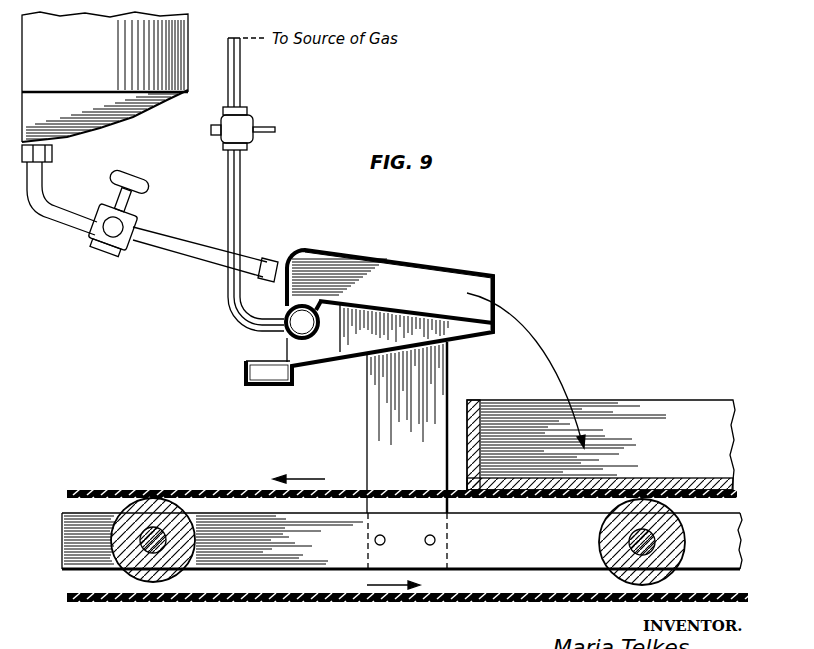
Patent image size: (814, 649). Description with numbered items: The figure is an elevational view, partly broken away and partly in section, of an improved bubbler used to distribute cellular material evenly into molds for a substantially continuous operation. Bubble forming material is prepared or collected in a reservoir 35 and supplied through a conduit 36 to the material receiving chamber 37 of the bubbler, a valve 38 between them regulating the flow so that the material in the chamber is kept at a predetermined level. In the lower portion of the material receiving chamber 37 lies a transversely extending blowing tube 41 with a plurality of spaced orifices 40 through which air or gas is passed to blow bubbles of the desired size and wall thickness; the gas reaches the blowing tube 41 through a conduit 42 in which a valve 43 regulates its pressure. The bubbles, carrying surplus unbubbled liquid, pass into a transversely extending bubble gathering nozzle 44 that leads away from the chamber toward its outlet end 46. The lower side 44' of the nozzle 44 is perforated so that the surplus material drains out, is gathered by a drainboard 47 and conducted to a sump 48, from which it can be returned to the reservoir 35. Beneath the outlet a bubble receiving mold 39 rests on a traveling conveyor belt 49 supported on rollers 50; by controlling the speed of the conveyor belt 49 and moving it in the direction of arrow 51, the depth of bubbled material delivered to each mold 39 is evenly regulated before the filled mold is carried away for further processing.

The reservoir 35 is at (133, 110).
The conduit 36 is at (160, 239).
The material receiving chamber 37 is at (300, 256).
The valve 38 is at (104, 229).
The bubble receiving mold 39 is at (472, 407).
The orifices 40 is at (306, 304).
The blowing tube 41 is at (283, 337).
The conduit 42 is at (237, 185).
The valve 43 is at (241, 128).
The bubble gathering nozzle 44 is at (398, 256).
The lower side of the nozzle 44' is at (404, 326).
The outlet end 46 is at (494, 293).
The drainboard 47 is at (321, 362).
The sump 48 is at (247, 371).
The conveyor belt 49 is at (188, 492).
The rollers 50 is at (150, 575).
The arrow 51 is at (305, 479).